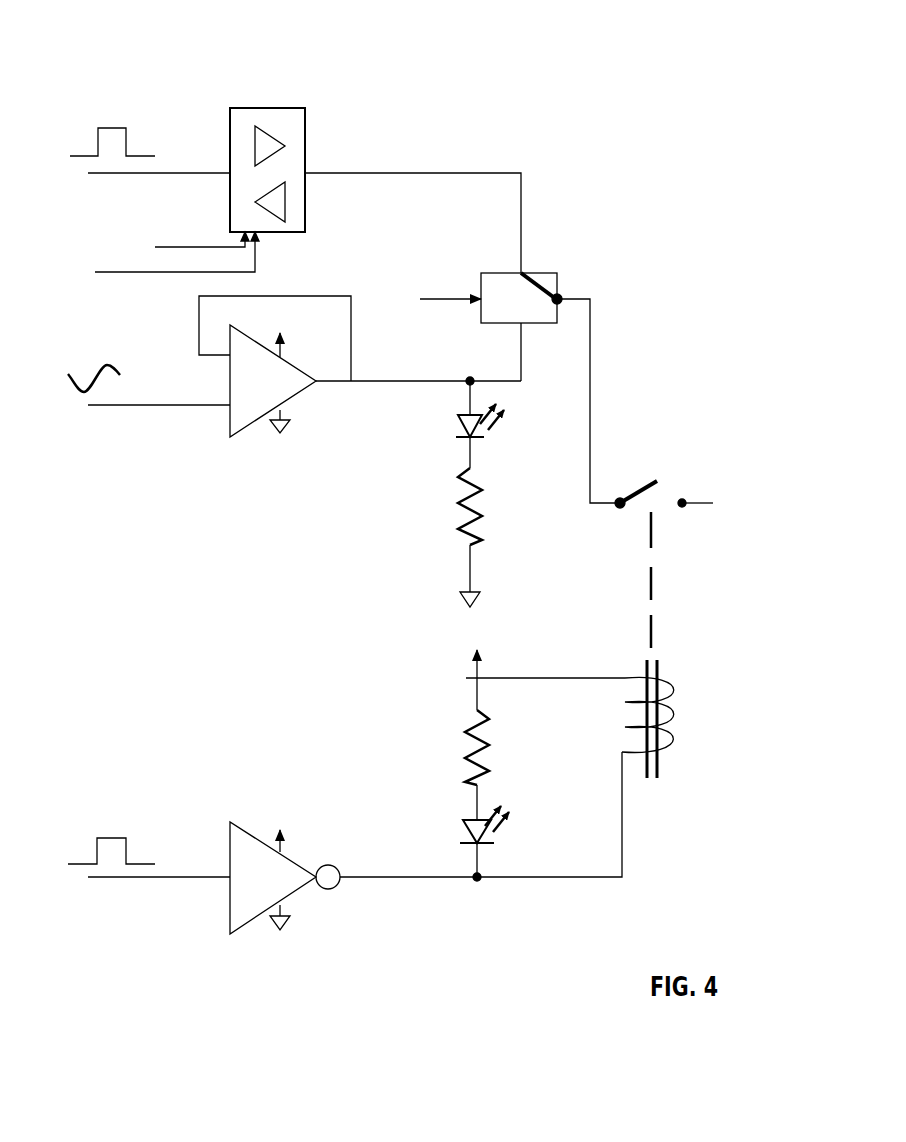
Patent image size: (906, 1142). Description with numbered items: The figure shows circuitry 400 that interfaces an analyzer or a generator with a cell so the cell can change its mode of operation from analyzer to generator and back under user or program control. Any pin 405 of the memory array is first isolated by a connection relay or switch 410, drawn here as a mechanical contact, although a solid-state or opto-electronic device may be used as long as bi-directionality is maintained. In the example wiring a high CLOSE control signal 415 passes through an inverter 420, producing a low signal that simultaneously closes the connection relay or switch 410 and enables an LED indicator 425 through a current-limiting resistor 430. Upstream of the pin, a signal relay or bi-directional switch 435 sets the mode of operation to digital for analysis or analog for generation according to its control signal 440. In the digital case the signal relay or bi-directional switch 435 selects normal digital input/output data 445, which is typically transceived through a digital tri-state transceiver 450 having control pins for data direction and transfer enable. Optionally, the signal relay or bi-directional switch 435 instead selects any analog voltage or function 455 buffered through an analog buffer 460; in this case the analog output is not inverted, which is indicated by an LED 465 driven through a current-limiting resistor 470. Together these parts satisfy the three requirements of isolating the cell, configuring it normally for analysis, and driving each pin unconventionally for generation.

The circuitry 400 is at (80, 45).
The pin 405 is at (792, 497).
The connection relay or switch 410 is at (763, 697).
The CLOSE control signal 415 is at (124, 928).
The inverter 420 is at (387, 808).
The LED indicator 425 is at (608, 848).
The current-limiting resistor 430 is at (567, 771).
The signal relay or bi-directional switch 435 is at (702, 332).
The control signal 440 is at (465, 288).
The digital input/output data 445 is at (124, 220).
The digital tri-state transceiver 450 is at (290, 98).
The analog voltage or function 455 is at (110, 446).
The analog buffer 460 is at (300, 523).
The LED 465 is at (555, 430).
The current-limiting resistor 470 is at (530, 547).